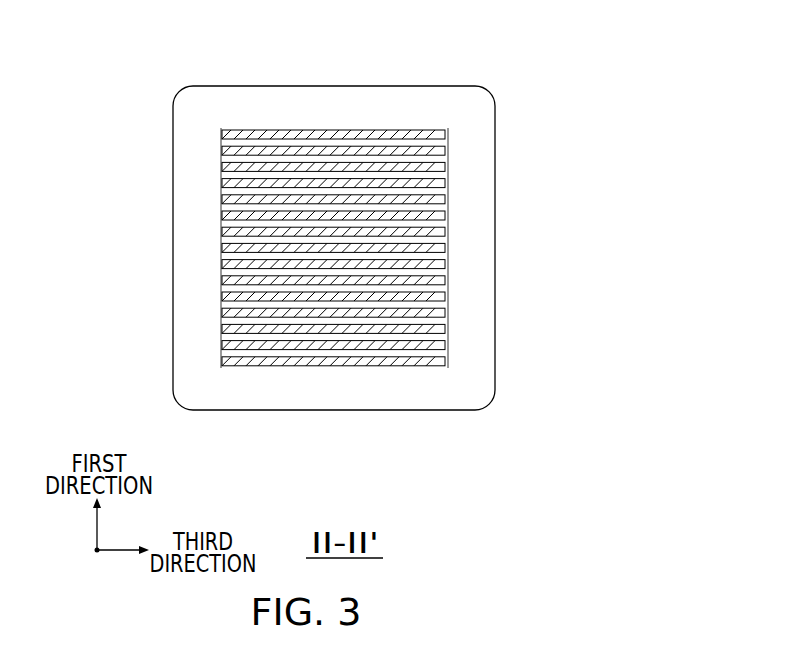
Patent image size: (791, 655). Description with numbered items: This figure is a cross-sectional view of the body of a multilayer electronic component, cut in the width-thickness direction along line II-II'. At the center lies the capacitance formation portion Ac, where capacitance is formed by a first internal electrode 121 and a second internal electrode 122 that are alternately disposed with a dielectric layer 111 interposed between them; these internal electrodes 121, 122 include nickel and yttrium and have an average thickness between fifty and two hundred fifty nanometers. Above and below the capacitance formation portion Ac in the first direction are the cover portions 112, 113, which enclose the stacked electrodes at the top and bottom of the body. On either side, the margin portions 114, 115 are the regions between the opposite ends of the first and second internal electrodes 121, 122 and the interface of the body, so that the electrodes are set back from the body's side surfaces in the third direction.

The dielectric layer 111 is at (345, 189).
The cover portion 112 is at (323, 92).
The cover portion 113 is at (317, 410).
The margin portion 114 is at (183, 228).
The margin portion 115 is at (487, 228).
The first internal electrode 121 is at (397, 135).
The second internal electrode 122 is at (415, 150).
The capacitance formation portion Ac is at (458, 310).